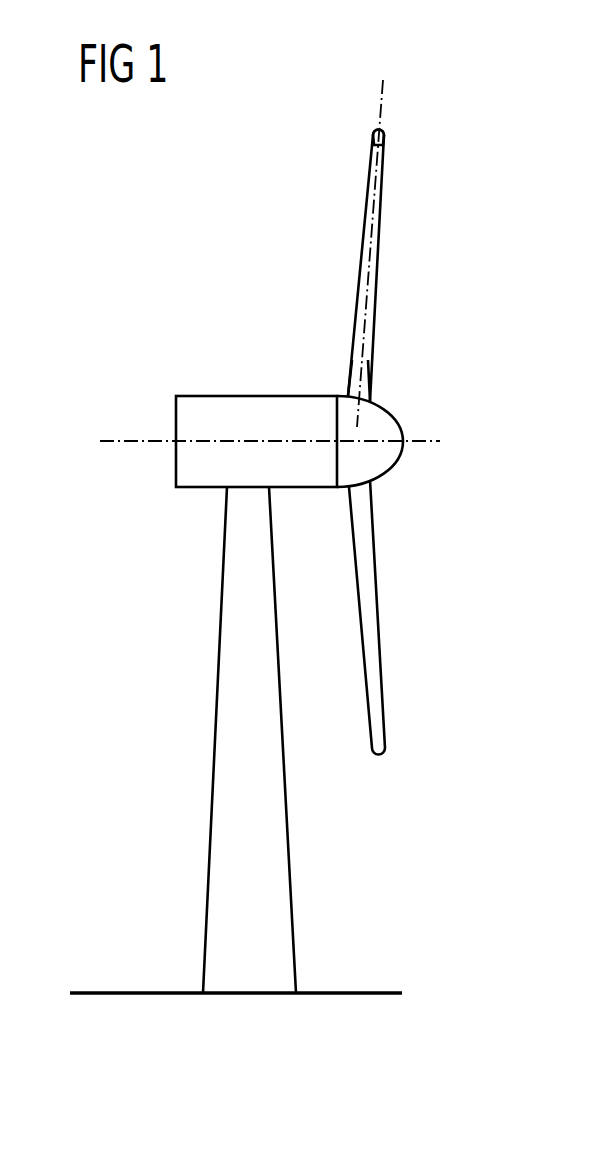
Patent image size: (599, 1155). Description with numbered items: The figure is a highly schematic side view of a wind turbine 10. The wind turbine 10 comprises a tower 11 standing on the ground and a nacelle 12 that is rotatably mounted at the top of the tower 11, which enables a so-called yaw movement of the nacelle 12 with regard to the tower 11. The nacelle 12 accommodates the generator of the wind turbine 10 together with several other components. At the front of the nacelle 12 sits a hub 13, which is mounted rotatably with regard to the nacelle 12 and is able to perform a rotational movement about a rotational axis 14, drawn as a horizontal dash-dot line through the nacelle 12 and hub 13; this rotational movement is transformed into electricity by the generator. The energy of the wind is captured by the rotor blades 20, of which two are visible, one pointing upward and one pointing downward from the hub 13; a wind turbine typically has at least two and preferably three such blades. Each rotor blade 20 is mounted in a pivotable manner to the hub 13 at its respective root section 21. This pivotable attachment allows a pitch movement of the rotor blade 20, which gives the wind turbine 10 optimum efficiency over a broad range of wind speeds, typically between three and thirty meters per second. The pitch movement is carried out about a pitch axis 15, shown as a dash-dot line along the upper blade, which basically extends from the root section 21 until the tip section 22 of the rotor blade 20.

The wind turbine 10 is at (164, 635).
The tower 11 is at (269, 825).
The nacelle 12 is at (227, 393).
The hub 13 is at (396, 418).
The rotational axis 14 is at (115, 438).
The pitch axis 15 is at (382, 96).
The rotor blade 20 is at (373, 278).
The root section 21 is at (362, 390).
The tip section 22 is at (387, 145).